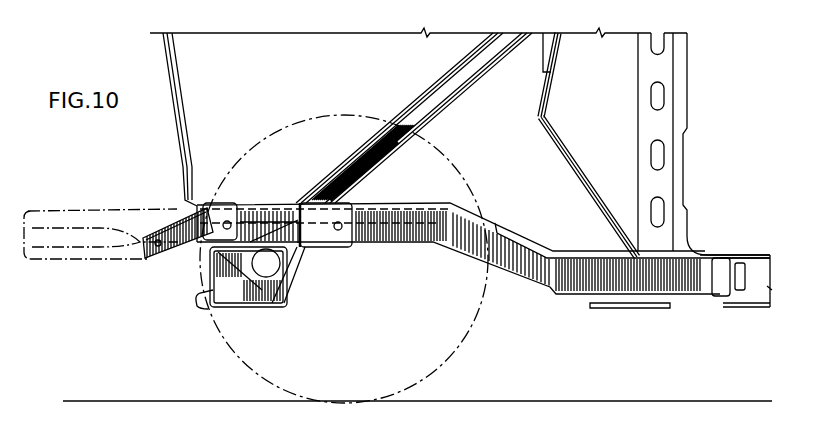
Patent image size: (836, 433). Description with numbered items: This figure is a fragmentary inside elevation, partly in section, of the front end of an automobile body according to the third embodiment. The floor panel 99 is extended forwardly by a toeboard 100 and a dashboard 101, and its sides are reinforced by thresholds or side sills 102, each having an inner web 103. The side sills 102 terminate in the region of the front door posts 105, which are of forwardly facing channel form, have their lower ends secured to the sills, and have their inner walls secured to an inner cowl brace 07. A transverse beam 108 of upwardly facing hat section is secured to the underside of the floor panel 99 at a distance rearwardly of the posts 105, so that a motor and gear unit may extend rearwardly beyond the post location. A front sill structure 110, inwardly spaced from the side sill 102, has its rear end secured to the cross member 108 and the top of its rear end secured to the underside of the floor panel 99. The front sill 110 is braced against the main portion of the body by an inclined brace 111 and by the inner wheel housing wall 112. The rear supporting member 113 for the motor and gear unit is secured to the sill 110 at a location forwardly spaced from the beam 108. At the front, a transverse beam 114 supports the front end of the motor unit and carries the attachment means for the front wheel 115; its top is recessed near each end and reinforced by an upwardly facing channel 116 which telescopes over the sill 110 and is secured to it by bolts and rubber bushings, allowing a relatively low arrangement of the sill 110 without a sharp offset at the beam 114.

The inner cowl brace 07 is at (624, 53).
The floor panel 99 is at (767, 256).
The toeboard 100 is at (584, 176).
The dashboard 101 is at (556, 76).
The threshold or side sill 102 is at (756, 308).
The inner web 103 is at (779, 272).
The front door post 105 is at (662, 187).
The transverse beam 108 is at (719, 298).
The front sill structure 110 is at (470, 233).
The inclined brace 111 is at (478, 58).
The inner wheel housing wall 112 is at (327, 42).
The rear supporting member 113 is at (613, 306).
The transverse beam 114 is at (254, 298).
The front wheel 115 is at (446, 367).
The upwardly facing channel 116 is at (328, 247).